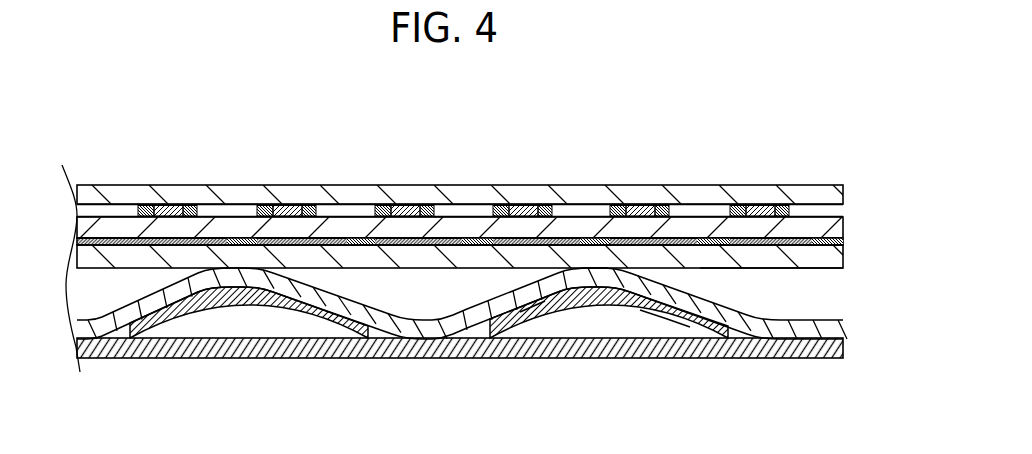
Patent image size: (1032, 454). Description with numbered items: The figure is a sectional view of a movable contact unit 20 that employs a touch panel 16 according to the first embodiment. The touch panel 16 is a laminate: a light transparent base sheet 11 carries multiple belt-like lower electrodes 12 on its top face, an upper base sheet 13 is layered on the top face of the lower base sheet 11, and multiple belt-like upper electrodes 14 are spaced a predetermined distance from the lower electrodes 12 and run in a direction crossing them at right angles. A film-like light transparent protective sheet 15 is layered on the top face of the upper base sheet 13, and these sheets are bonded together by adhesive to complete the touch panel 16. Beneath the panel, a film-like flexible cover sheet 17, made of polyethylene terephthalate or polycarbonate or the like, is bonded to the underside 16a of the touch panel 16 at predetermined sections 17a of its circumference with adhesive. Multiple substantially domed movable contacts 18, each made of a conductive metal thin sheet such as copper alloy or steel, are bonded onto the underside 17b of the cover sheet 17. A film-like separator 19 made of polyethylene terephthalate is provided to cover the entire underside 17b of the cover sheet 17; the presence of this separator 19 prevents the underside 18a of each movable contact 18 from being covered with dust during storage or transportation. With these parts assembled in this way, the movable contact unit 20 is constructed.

The base sheet 11 is at (470, 258).
The lower electrodes 12 is at (362, 243).
The upper base sheet 13 is at (240, 227).
The upper electrodes 14 is at (168, 207).
The protective sheet 15 is at (567, 197).
The touch panel 16 is at (853, 185).
The underside of touch panel 16a is at (773, 268).
The cover sheet 17 is at (440, 330).
The predetermined sections of cover sheet circumference 17a is at (605, 268).
The underside of cover sheet 17b is at (540, 305).
The movable contact 18 is at (605, 305).
The underside of movable contact 18a is at (662, 317).
The separator 19 is at (750, 347).
The movable contact unit 20 is at (727, 160).